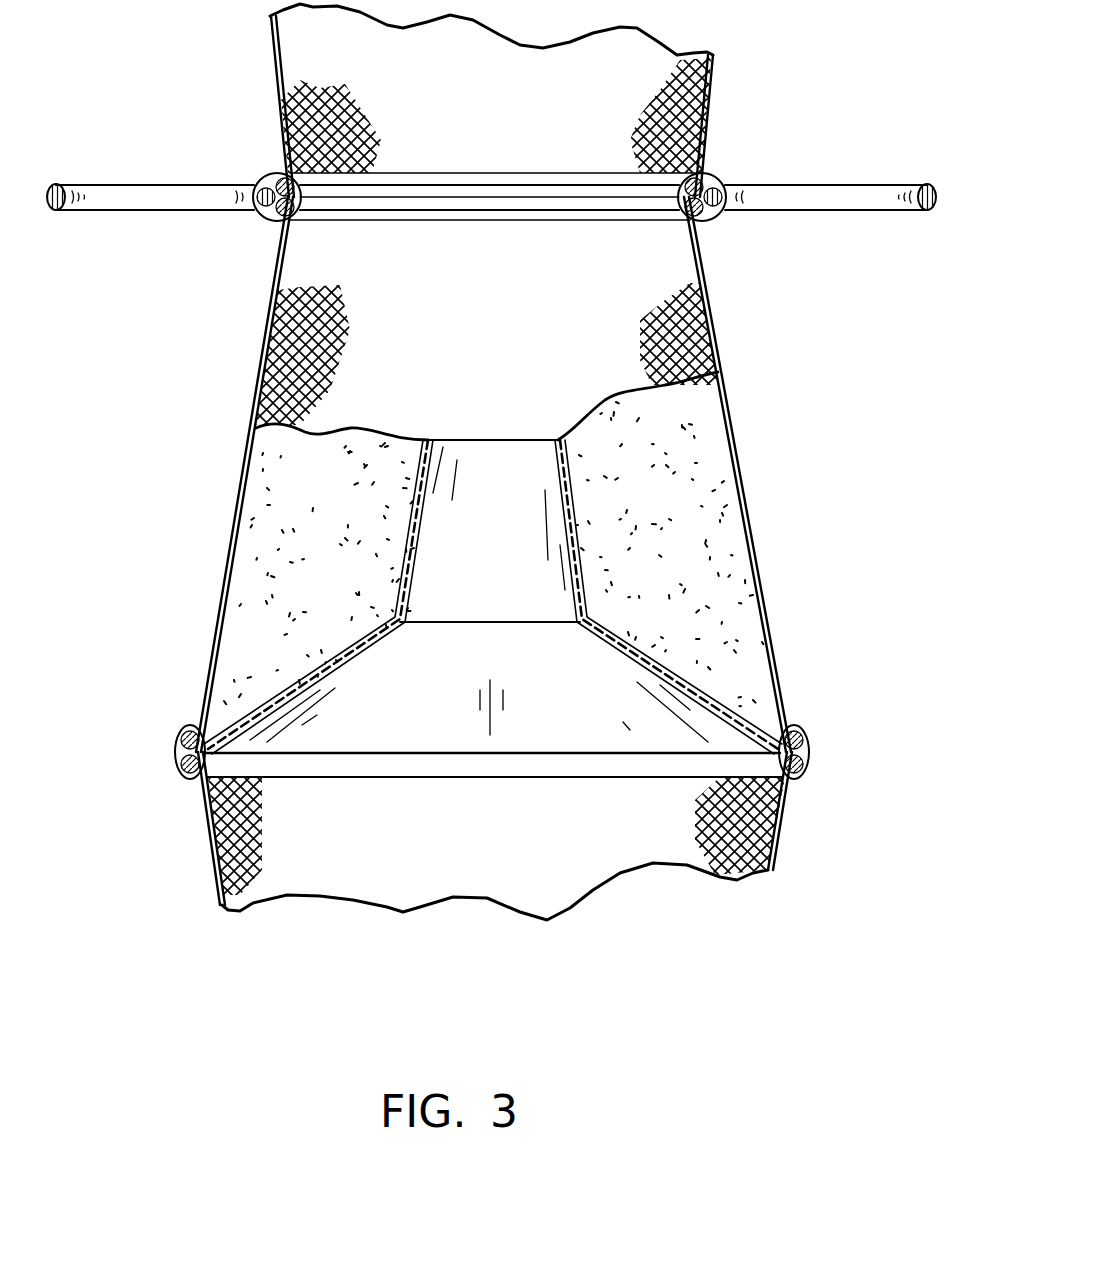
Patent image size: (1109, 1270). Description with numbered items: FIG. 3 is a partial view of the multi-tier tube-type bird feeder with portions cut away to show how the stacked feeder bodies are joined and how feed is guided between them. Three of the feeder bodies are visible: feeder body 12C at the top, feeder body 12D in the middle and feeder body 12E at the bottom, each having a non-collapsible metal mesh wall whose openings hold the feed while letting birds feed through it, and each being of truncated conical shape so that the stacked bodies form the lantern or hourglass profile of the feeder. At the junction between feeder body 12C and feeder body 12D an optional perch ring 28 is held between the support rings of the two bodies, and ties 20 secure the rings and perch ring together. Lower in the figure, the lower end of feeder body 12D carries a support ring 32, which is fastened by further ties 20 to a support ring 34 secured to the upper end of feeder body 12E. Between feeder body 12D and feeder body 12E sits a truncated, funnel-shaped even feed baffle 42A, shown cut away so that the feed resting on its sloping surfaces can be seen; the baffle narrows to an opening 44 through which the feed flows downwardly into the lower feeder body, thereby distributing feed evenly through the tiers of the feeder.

The feeder body 12C is at (718, 68).
The feeder body 12D is at (715, 338).
The feeder body 12E is at (770, 832).
The perch ring 28 is at (830, 200).
The ties 20 is at (712, 222).
The opening 44 is at (495, 450).
The baffle 42A is at (445, 552).
The support ring 32 is at (795, 728).
The support ring 34 is at (800, 770).